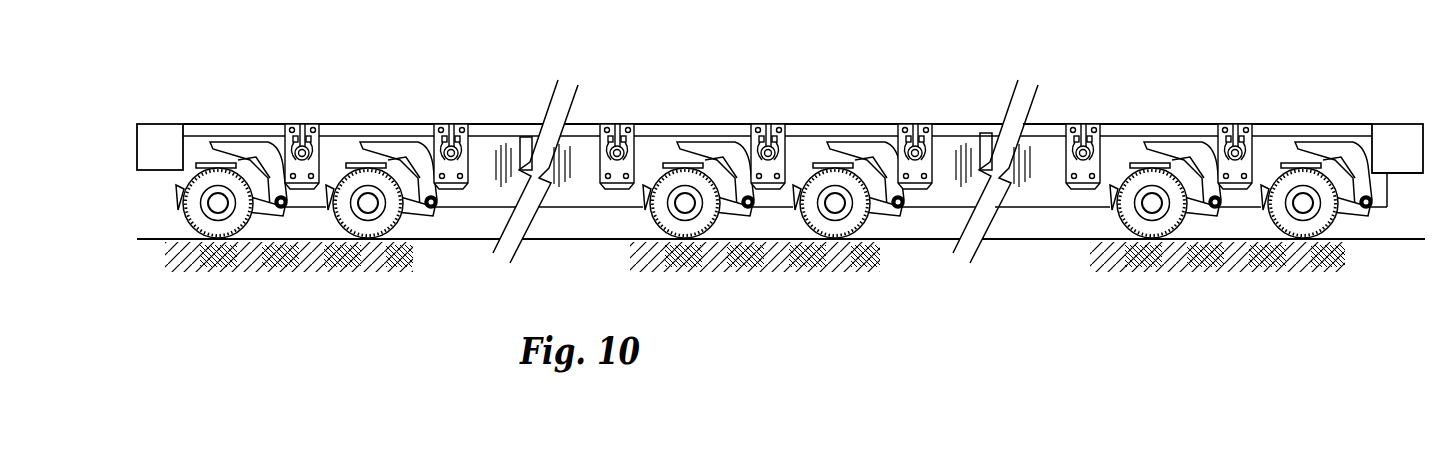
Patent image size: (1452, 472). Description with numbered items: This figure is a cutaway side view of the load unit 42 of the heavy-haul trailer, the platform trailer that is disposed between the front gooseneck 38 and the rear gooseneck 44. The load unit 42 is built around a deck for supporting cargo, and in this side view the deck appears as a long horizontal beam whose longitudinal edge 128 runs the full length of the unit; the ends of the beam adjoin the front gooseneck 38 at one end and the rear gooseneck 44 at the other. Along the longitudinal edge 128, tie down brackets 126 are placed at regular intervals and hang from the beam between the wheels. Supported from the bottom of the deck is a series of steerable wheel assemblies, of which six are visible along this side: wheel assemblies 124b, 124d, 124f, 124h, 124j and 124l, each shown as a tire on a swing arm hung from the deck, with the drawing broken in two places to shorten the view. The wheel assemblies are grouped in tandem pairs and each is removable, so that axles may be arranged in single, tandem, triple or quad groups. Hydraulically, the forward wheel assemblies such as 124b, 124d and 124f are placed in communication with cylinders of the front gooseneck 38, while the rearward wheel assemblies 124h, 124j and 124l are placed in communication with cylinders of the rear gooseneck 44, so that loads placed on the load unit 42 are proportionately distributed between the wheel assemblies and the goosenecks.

The rear gooseneck 44 is at (137, 137).
The load unit 42 is at (1328, 123).
The longitudinal edge of deck 128 is at (1365, 125).
The front gooseneck 38 is at (1395, 158).
The tie down bracket 126 is at (321, 127).
The wheel assembly 124l is at (258, 218).
The wheel assembly 124j is at (408, 218).
The wheel assembly 124h is at (725, 218).
The wheel assembly 124f is at (875, 218).
The wheel assembly 124d is at (1192, 218).
The wheel assembly 124b is at (1343, 218).